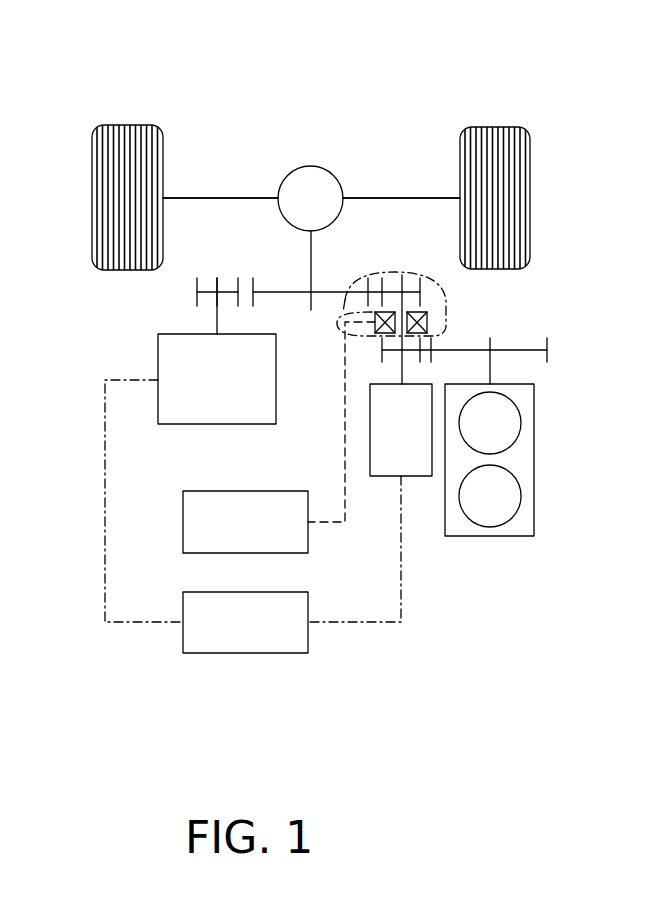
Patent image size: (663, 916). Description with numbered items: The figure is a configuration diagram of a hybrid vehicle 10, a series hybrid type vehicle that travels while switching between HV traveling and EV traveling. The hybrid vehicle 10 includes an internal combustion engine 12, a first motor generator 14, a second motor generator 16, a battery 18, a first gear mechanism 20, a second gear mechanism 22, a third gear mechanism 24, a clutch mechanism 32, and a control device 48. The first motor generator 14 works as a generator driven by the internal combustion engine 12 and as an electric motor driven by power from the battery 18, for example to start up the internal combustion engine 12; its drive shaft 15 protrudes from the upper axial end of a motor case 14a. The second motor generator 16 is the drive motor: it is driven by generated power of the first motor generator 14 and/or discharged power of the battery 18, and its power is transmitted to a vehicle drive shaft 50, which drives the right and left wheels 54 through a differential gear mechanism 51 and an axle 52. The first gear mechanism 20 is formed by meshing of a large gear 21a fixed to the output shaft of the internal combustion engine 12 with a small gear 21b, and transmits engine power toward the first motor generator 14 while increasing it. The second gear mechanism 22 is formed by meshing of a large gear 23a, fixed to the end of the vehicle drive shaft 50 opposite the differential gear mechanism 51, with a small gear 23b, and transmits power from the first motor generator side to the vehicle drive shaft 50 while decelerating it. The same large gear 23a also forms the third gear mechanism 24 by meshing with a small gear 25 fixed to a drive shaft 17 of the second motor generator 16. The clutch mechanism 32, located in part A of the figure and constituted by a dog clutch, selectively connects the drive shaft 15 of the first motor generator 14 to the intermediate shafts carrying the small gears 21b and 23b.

The hybrid vehicle 10 is at (388, 84).
The wheels 54 is at (133, 125).
The axle 52 is at (232, 198).
The differential gear mechanism 51 is at (313, 166).
The vehicle drive shaft 50 is at (313, 247).
The large gear 23a is at (280, 293).
The third gear mechanism 24 is at (204, 288).
The small gear 25 is at (226, 286).
The drive shaft 17 is at (215, 312).
The small gear 23b is at (392, 287).
The second gear mechanism 22 is at (415, 283).
The drive shaft 15 is at (392, 366).
The clutch mechanism 32 is at (341, 326).
The part A is at (450, 306).
The first gear mechanism 20 is at (536, 348).
The small gear 21b is at (410, 362).
The large gear 21a is at (518, 352).
The internal combustion engine 12 is at (535, 453).
The first motor generator 14 is at (386, 478).
The motor case 14a is at (417, 478).
The second motor generator 16 is at (248, 425).
The control device 48 is at (183, 515).
The battery 18 is at (245, 654).